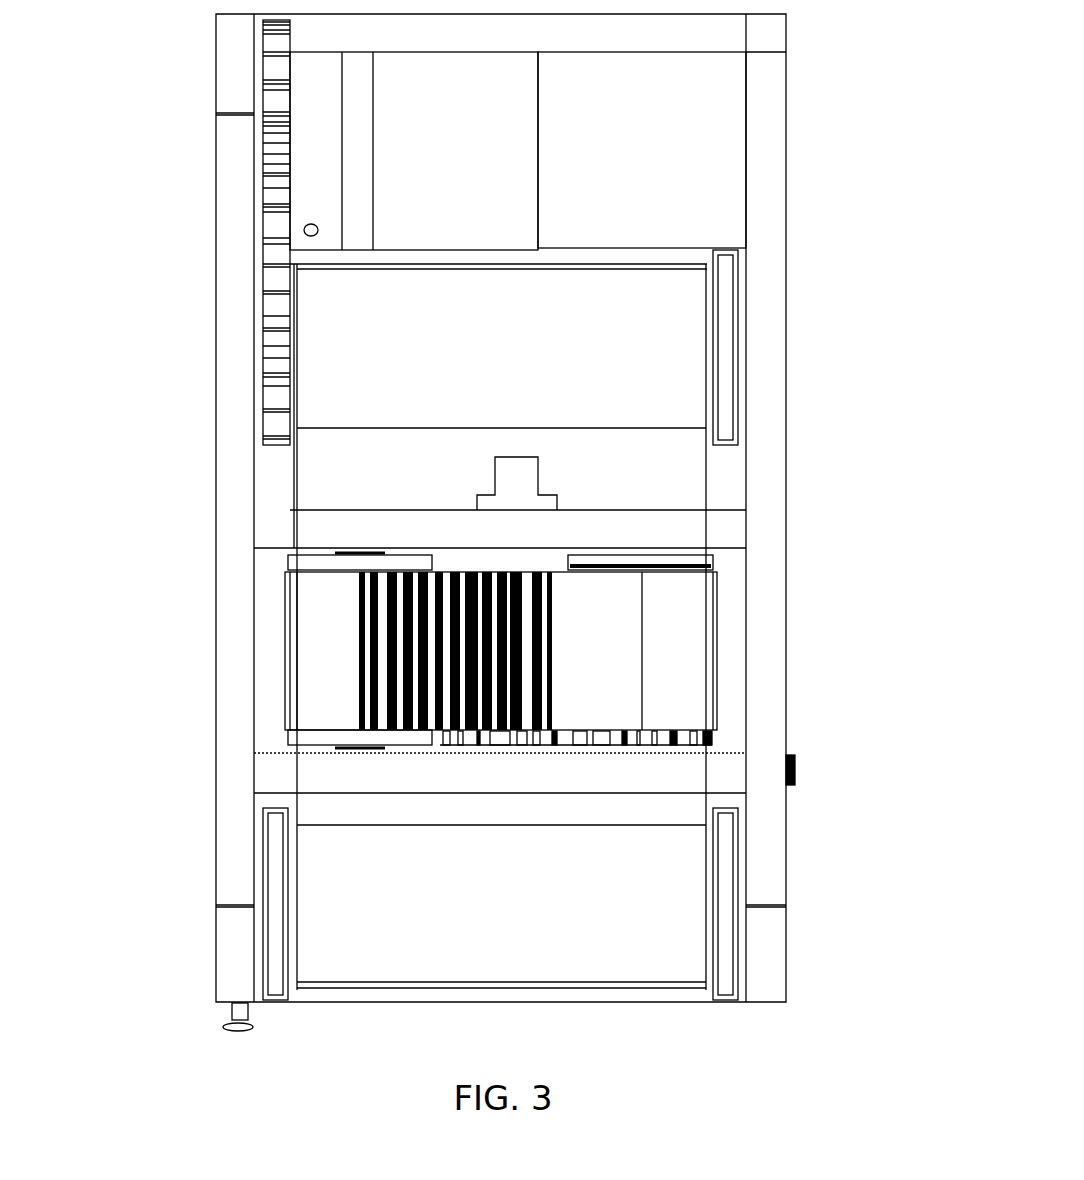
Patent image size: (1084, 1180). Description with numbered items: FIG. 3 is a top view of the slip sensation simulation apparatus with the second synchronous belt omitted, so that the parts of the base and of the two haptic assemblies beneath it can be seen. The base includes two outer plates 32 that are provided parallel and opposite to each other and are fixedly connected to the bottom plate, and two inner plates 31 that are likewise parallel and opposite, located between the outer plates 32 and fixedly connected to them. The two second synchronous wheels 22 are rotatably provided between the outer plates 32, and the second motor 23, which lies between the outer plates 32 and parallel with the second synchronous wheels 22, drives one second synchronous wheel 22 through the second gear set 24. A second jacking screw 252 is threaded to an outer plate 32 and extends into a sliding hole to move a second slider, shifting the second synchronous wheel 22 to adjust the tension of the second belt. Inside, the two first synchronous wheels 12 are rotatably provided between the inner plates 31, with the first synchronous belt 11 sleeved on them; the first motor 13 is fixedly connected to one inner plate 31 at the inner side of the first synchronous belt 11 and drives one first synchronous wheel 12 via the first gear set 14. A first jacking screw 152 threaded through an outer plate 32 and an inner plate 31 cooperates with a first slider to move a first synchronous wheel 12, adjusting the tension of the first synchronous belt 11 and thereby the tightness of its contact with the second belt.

The first synchronous belt 11 is at (595, 670).
The first synchronous wheel 12 is at (313, 562).
The first motor 13 is at (520, 558).
The first gear set 14 is at (683, 740).
The first jacking screw 152 is at (795, 768).
The second synchronous wheel 22 is at (730, 272).
The second motor 23 is at (724, 164).
The second gear set 24 is at (267, 178).
The second jacking screw 252 is at (248, 1020).
The inner plate 31 is at (730, 512).
The outer plate 32 is at (236, 295).